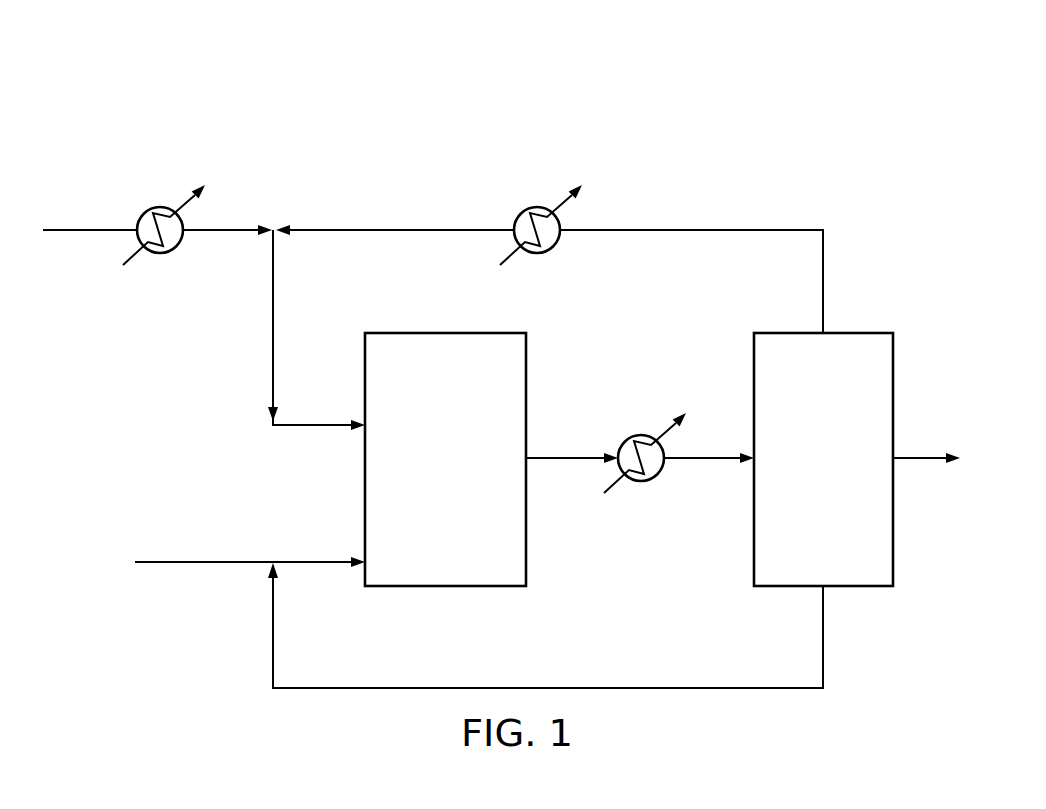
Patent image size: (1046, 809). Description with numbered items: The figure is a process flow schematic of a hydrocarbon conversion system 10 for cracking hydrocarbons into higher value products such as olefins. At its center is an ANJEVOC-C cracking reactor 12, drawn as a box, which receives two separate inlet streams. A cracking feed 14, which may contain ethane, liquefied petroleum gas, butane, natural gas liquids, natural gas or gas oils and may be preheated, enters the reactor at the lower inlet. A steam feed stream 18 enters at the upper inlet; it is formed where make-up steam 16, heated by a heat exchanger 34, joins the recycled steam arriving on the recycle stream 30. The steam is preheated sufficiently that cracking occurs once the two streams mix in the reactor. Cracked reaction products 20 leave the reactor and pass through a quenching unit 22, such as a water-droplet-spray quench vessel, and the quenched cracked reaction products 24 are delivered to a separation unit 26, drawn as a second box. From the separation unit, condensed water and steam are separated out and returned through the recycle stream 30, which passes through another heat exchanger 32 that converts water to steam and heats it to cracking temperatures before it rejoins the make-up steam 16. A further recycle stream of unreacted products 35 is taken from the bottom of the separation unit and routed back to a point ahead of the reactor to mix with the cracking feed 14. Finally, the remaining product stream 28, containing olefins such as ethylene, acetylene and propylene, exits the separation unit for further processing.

The hydrocarbon conversion system 10 is at (397, 69).
The cracking reactor 12 is at (460, 478).
The cracking feed 14 is at (318, 565).
The make-up steam 16 is at (90, 228).
The steam feed stream 18 is at (318, 423).
The cracked reaction products 20 is at (570, 457).
The quenching unit 22 is at (638, 437).
The quenched cracked reaction products 24 is at (703, 457).
The separation unit 26 is at (838, 478).
The product stream 28 is at (920, 457).
The recycle stream 30 is at (692, 229).
The heat exchanger 32 is at (542, 208).
The heat exchanger 34 is at (158, 208).
The recycle stream of unreacted products 35 is at (708, 688).